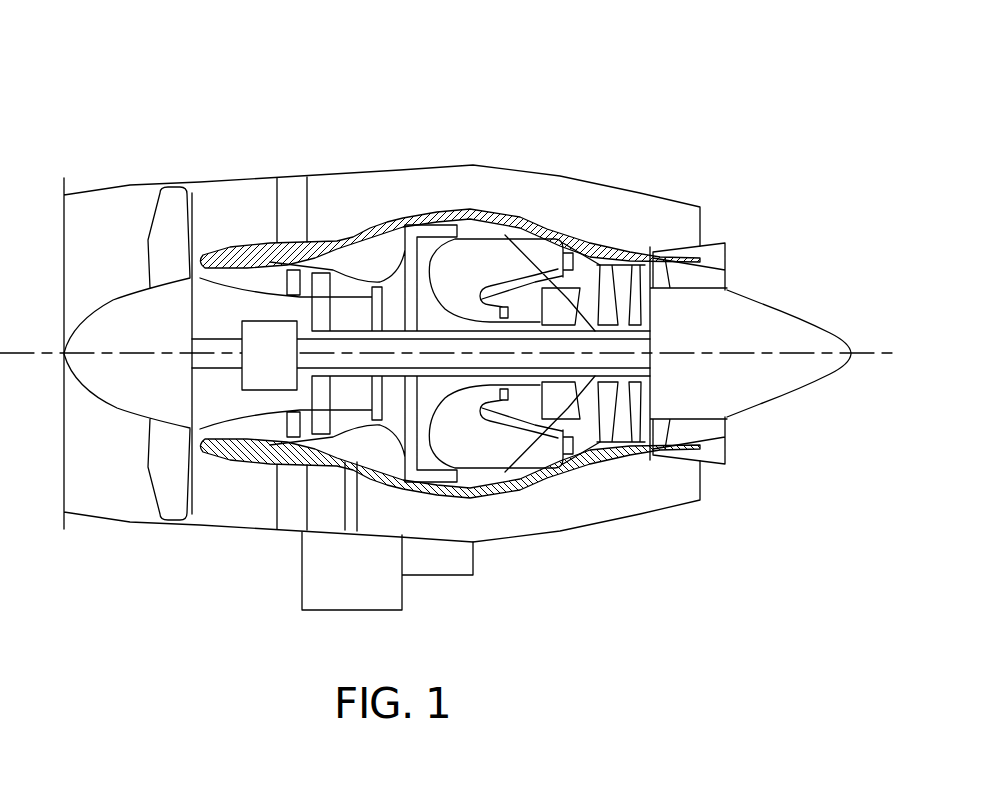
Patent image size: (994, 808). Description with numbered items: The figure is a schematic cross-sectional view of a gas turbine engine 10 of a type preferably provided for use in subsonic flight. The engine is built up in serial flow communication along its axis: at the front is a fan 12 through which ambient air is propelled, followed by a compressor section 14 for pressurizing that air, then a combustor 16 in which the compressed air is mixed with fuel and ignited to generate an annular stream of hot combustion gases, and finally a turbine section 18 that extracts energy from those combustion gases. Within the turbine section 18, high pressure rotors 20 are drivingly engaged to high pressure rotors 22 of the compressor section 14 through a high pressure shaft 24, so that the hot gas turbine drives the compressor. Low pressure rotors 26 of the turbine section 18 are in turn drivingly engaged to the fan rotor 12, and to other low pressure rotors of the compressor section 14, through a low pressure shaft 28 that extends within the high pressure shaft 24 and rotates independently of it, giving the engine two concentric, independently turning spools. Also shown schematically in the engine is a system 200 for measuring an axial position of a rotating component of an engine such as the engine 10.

The gas turbine engine 10 is at (605, 117).
The fan 12 is at (166, 460).
The compressor section 14 is at (347, 275).
The combustor 16 is at (497, 253).
The turbine section 18 is at (575, 400).
The high pressure rotor 20 is at (566, 302).
The high pressure rotor 22 is at (394, 300).
The high pressure shaft 24 is at (498, 331).
The low pressure rotor 26 is at (668, 206).
The low pressure shaft 28 is at (237, 368).
The system for measuring an axial position of a rotating component 200 is at (269, 355).